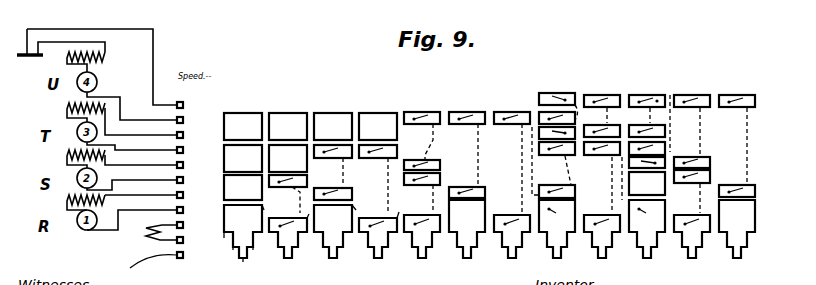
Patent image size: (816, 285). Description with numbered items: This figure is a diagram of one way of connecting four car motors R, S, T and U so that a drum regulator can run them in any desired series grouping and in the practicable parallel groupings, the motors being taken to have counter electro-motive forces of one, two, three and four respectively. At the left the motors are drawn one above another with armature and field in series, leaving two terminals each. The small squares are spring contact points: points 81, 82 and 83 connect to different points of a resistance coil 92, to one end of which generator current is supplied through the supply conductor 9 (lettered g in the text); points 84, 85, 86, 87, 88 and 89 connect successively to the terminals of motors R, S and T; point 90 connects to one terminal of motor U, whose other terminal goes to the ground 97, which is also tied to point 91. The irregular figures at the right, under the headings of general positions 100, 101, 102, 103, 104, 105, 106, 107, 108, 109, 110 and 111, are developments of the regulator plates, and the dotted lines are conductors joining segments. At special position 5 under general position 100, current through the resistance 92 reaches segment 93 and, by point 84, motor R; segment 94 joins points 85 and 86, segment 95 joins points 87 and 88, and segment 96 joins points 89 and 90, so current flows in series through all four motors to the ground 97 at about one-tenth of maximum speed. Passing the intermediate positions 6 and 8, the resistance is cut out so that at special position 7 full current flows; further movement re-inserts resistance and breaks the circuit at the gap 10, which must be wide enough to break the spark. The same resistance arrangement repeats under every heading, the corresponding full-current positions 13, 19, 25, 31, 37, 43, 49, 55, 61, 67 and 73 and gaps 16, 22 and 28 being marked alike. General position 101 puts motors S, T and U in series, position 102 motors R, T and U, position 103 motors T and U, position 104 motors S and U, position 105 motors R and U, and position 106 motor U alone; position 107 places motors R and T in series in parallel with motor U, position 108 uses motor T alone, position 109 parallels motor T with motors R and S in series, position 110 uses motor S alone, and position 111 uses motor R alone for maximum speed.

The ground 97 is at (61, 50).
The contact point 91 is at (188, 105).
The contact point 90 is at (188, 120).
The contact point 89 is at (188, 135).
The contact point 88 is at (188, 150).
The contact point 87 is at (188, 165).
The contact point 86 is at (188, 180).
The contact point 85 is at (188, 195).
The contact point 84 is at (188, 210).
The contact point 83 is at (188, 225).
The contact point 82 is at (188, 240).
The contact point 81 is at (188, 255).
The resistance coil 92 is at (151, 239).
The conductor 9 is at (187, 254).
The segment 96 is at (241, 127).
The segment 95 is at (243, 158).
The segment 94 is at (243, 187).
The segment 93 is at (243, 231).
The special position 5 is at (220, 240).
The contact 6 is at (230, 253).
The special position 7 is at (241, 266).
The contact 8 is at (252, 253).
The gap 10 is at (267, 211).
The controller position 13 is at (288, 246).
The contact 16 is at (311, 211).
The controller position 19 is at (333, 240).
The contact 22 is at (357, 207).
The controller position 25 is at (378, 246).
The contact 28 is at (401, 210).
The controller position 31 is at (422, 245).
The controller position 37 is at (467, 237).
The controller position 43 is at (512, 245).
The controller position 49 is at (557, 237).
The controller position 55 is at (602, 245).
The controller position 61 is at (647, 237).
The controller position 67 is at (692, 245).
The controller position 73 is at (737, 237).
The general position 100 is at (243, 98).
The general position 101 is at (288, 98).
The general position 102 is at (333, 98).
The general position 103 is at (378, 98).
The general position 104 is at (422, 90).
The general position 105 is at (467, 90).
The general position 106 is at (512, 90).
The general position 107 is at (557, 80).
The general position 108 is at (602, 81).
The general position 109 is at (647, 81).
The general position 110 is at (692, 81).
The general position 111 is at (737, 81).